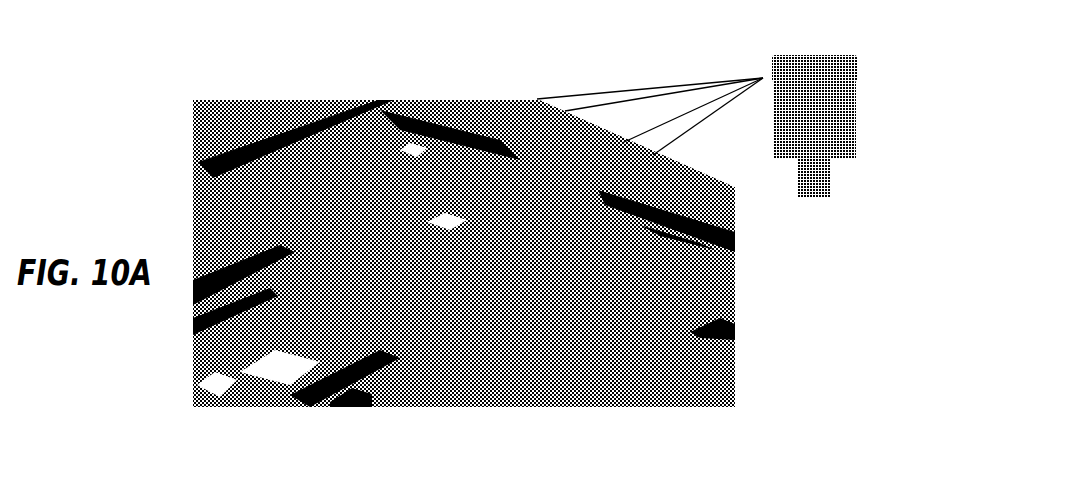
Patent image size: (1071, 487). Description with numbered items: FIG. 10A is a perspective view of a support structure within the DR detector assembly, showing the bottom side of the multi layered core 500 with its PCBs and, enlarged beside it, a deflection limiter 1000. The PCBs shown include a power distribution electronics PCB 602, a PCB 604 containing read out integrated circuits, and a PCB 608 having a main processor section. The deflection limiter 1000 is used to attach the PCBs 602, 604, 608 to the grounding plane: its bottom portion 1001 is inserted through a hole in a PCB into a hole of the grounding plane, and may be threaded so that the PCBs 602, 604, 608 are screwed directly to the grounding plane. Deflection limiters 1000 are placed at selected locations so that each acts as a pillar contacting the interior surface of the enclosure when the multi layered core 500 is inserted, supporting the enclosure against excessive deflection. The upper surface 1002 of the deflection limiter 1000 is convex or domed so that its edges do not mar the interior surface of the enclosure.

The multi layered core 500 is at (446, 293).
The power distribution electronics PCB 602 is at (658, 253).
The PCB containing read out integrated circuits 604 is at (702, 326).
The PCB having a main processor section 608 is at (350, 390).
The deflection limiter 1000 is at (736, 154).
The bottom portion 1001 is at (851, 213).
The upper surface 1002 is at (847, 45).